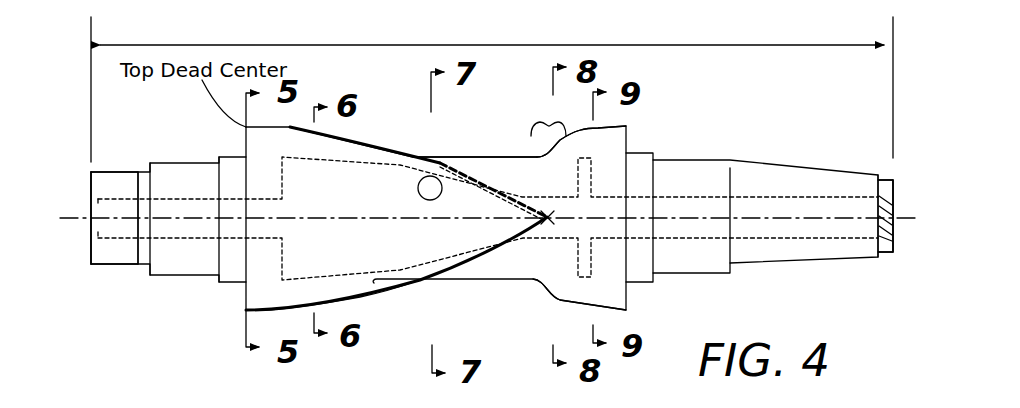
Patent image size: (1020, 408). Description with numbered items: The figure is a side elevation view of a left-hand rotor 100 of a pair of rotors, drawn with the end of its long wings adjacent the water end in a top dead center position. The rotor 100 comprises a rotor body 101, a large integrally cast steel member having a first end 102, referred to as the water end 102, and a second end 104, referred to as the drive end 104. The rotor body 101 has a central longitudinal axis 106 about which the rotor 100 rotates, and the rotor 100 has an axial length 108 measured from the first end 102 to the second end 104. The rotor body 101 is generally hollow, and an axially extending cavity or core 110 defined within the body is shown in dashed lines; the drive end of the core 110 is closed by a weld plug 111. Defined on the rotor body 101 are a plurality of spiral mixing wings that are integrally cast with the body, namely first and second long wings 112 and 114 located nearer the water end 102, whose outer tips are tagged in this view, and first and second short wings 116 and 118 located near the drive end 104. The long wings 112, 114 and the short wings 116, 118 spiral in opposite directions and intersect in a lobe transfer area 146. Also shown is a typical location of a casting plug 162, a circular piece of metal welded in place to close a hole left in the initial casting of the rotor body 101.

The rotor 100 is at (695, 136).
The rotor body 101 is at (492, 165).
The first end 102 is at (90, 255).
The second end 104 is at (893, 252).
The central longitudinal axis 106 is at (84, 218).
The axial length 108 is at (345, 45).
The core 110 is at (204, 233).
The weld plug 111 is at (893, 200).
The first long wing 112 is at (290, 127).
The second long wing 114 is at (372, 290).
The first short wing 116 is at (598, 128).
The second short wing 118 is at (565, 302).
The lobe transfer area 146 is at (548, 122).
The casting plug 162 is at (430, 176).